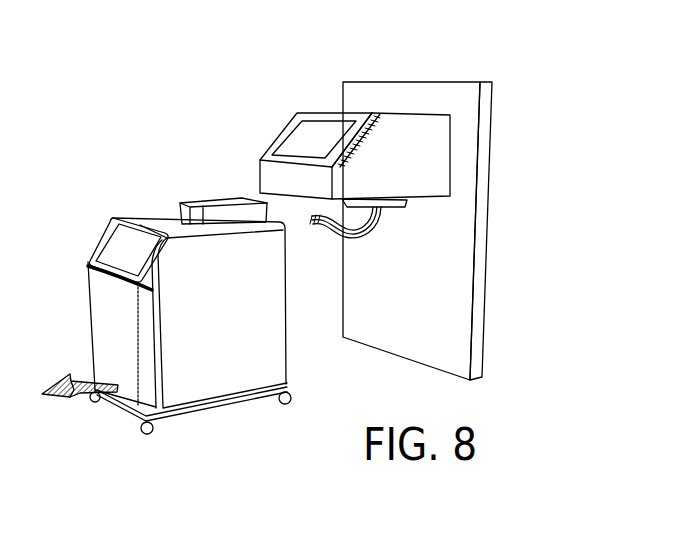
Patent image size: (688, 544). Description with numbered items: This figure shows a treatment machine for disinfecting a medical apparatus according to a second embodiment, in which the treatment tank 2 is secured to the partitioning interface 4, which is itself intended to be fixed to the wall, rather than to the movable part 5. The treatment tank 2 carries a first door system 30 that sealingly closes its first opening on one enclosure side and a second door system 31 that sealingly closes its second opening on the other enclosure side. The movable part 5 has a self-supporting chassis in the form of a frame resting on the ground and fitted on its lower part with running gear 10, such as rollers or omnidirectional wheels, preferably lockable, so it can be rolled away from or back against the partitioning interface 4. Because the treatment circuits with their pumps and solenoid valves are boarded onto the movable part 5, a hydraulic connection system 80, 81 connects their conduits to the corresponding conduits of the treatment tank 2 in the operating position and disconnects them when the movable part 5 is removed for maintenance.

The treatment tank 2 is at (324, 97).
The partitioning interface 4 is at (466, 105).
The movable part 5 is at (86, 173).
The running gear 10 is at (97, 402).
The first door system 30 is at (305, 140).
The second door system 31 is at (505, 148).
The hydraulic connection system 80 is at (220, 187).
The hydraulic connection system 81 is at (315, 245).